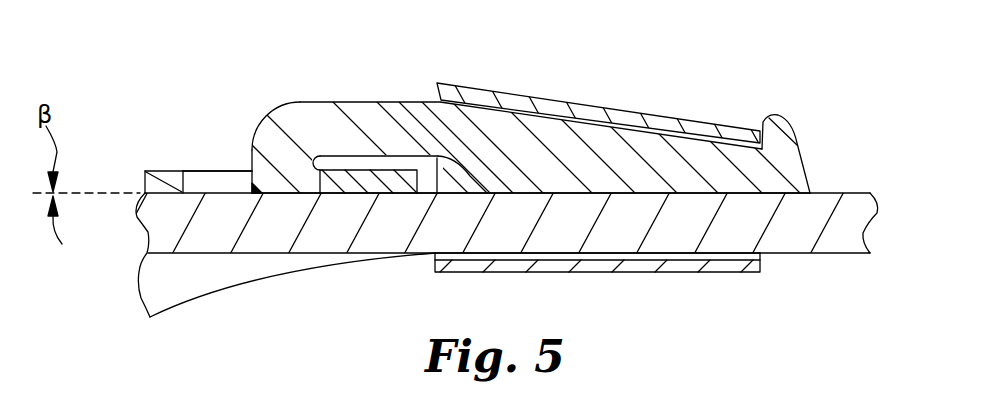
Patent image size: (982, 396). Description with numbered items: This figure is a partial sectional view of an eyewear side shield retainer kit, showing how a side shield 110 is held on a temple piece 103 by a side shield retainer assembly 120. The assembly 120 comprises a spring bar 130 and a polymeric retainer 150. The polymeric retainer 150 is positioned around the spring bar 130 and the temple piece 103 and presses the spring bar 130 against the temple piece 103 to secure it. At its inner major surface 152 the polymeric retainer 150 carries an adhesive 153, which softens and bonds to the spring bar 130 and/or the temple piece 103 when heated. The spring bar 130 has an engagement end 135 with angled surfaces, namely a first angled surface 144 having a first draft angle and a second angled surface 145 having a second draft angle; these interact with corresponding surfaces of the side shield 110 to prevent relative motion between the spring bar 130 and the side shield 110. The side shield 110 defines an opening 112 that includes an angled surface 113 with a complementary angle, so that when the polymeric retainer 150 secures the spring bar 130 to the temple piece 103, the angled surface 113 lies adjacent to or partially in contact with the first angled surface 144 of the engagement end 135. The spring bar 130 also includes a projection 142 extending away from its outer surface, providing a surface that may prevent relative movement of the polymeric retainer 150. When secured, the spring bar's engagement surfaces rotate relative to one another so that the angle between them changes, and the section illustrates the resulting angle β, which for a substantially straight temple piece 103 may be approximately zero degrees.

The temple piece 103 is at (857, 205).
The side shield 110 is at (172, 130).
The opening 112 is at (215, 177).
The angled surface 113 is at (183, 186).
The side shield retainer assembly 120 is at (533, 107).
The spring bar 130 is at (400, 101).
The engagement end 135 is at (278, 110).
The projection 142 is at (790, 118).
The first angled surface 144 is at (248, 175).
The second angled surface 145 is at (325, 155).
The polymeric retainer 150 is at (585, 103).
The inner major surface 152 is at (687, 253).
The adhesive 153 is at (555, 258).